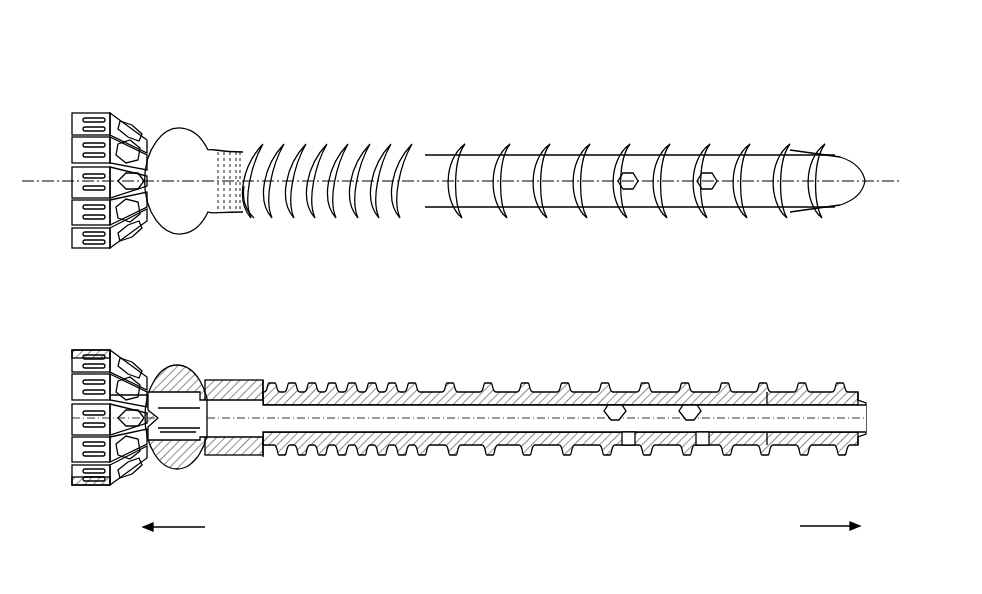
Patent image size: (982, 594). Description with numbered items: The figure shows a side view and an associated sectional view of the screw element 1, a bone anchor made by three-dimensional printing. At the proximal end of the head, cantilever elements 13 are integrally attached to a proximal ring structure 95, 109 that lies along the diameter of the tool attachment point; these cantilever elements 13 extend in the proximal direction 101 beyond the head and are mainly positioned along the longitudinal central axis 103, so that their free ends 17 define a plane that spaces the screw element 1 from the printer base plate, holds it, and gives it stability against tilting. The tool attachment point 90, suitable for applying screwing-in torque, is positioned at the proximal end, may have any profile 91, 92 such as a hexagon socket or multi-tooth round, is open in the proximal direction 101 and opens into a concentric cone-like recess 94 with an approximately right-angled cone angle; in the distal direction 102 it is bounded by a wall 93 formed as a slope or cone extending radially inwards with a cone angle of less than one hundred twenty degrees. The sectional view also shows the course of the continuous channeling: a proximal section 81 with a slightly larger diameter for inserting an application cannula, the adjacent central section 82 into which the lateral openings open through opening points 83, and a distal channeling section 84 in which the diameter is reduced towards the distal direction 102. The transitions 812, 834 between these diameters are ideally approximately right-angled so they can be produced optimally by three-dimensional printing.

The screw element 1 is at (223, 77).
The cantilever elements 13 is at (92, 352).
The free ends 17 is at (72, 358).
The proximal channeling section 81 is at (262, 405).
The transition 812 is at (265, 425).
The central channeling section 82 is at (460, 418).
The opening points 83 is at (694, 402).
The distal channeling section 84 is at (800, 412).
The transition 834 is at (767, 447).
The tool attachment point 90 is at (174, 408).
The profile 91 is at (182, 418).
The profile 92 is at (167, 434).
The wall 93 is at (208, 388).
The concentric cone-like recess 94 is at (146, 395).
The proximal ring structure 95 is at (189, 298).
The proximal ring structure 109 is at (146, 378).
The proximal direction 101 is at (174, 538).
The distal direction 102 is at (851, 526).
The longitudinal central axis 103 is at (877, 183).